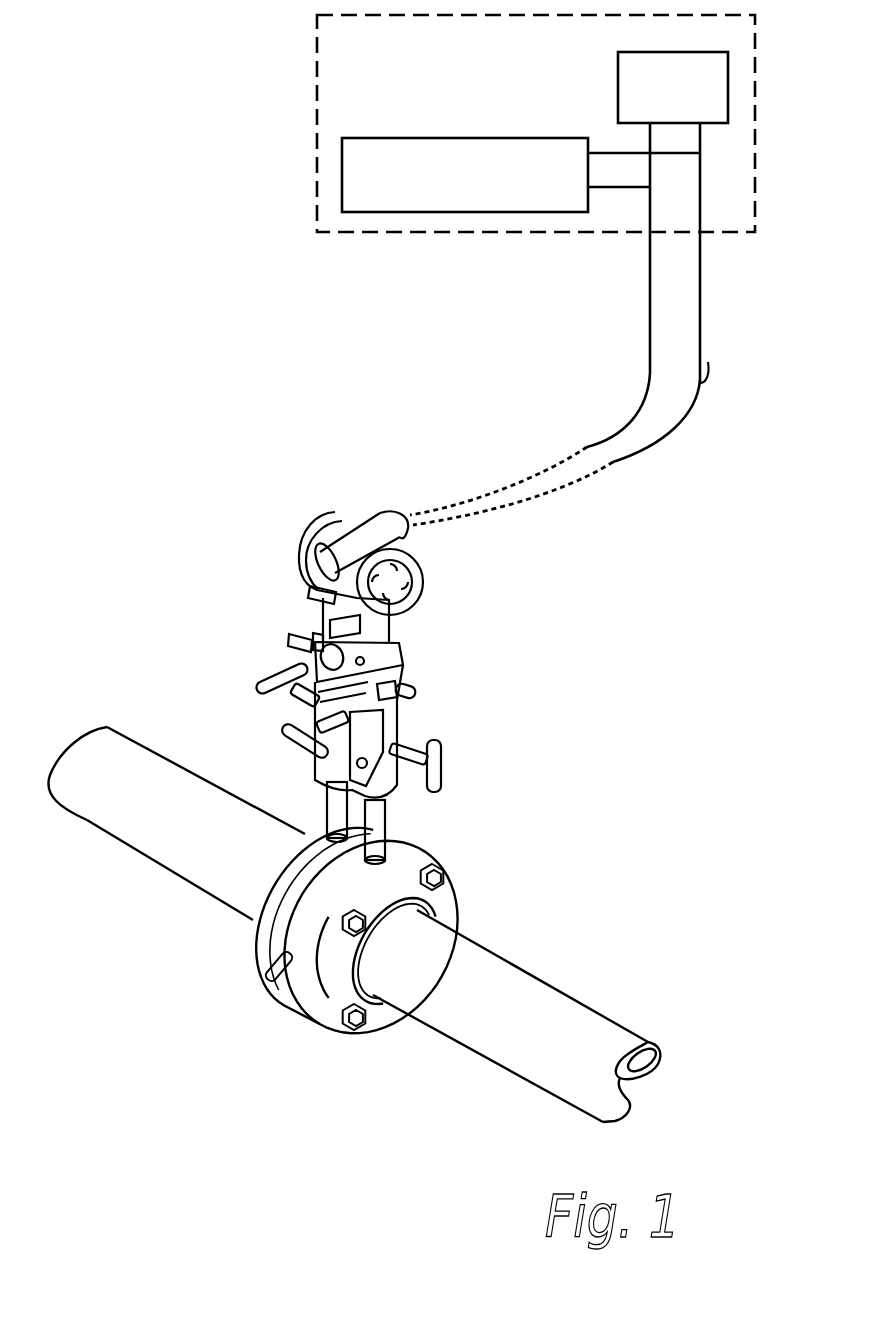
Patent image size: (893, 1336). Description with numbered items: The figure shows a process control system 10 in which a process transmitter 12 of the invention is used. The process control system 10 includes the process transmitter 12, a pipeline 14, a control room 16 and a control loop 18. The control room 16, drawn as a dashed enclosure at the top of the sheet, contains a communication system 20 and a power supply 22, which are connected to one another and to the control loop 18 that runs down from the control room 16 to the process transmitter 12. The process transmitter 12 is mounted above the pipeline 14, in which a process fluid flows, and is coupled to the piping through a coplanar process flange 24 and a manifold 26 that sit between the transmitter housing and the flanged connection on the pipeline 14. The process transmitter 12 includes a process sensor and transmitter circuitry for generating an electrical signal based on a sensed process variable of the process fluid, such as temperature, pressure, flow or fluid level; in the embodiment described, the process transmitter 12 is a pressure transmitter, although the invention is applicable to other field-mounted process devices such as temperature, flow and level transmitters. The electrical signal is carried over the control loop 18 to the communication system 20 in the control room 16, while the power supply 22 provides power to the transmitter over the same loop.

The process control system 10 is at (208, 338).
The process transmitter 12 is at (396, 508).
The pipeline 14 is at (510, 934).
The control room 16 is at (317, 130).
The control loop 18 is at (650, 373).
The communication system 20 is at (383, 138).
The power supply 22 is at (618, 88).
The coplanar process flange 24 is at (413, 678).
The manifold 26 is at (397, 725).